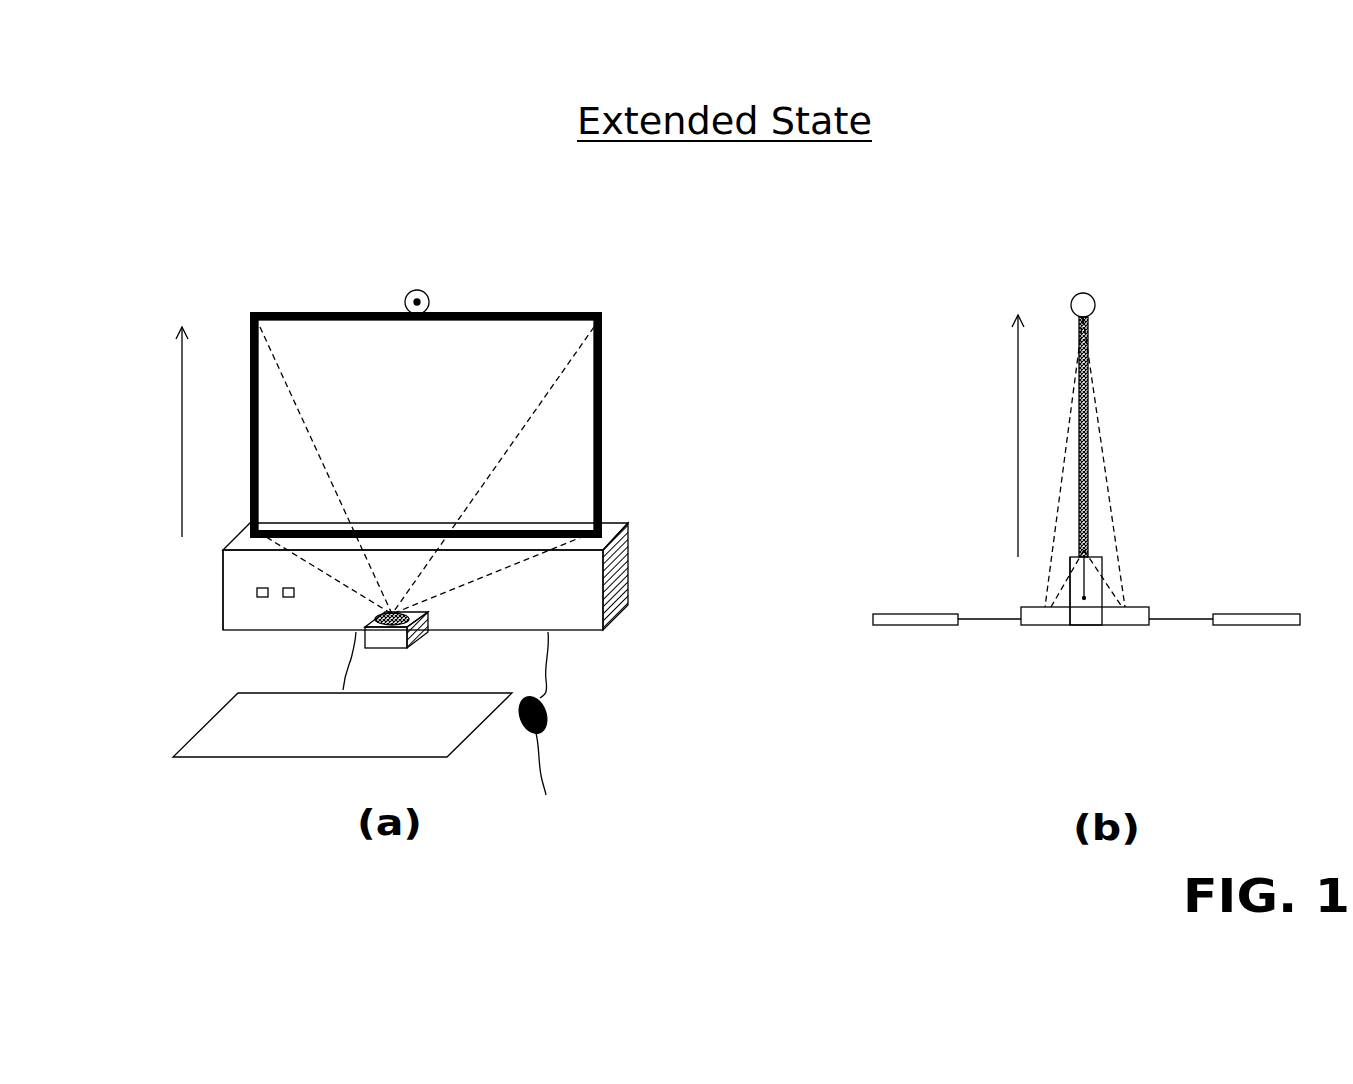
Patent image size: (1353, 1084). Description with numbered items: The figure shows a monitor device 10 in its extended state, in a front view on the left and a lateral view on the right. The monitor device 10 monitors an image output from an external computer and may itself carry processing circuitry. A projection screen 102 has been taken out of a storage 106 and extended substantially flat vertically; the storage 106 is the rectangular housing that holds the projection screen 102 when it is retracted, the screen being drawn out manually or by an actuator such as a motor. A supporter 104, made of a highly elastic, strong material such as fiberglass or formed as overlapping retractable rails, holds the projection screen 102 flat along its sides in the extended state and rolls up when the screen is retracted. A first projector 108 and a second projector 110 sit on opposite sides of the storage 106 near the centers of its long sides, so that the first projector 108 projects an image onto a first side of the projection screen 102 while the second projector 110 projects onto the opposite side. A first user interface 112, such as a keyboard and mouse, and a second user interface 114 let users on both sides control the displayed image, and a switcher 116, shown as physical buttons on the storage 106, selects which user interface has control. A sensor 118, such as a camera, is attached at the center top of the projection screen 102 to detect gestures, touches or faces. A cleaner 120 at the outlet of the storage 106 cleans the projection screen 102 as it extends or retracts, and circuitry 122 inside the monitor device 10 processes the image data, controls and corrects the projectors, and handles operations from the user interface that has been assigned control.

The monitor device 10 is at (417, 222).
The projection screen 102 is at (571, 428).
The supporter 104 is at (603, 483).
The storage 106 is at (622, 582).
The first projector 108 is at (431, 633).
The second projector 110 is at (1122, 620).
The first user interface 112 is at (447, 732).
The second user interface 114 is at (1265, 620).
The switcher 116 is at (257, 592).
The sensor 118 is at (429, 298).
The cleaner 120 is at (252, 528).
The circuitry 122 is at (253, 612).